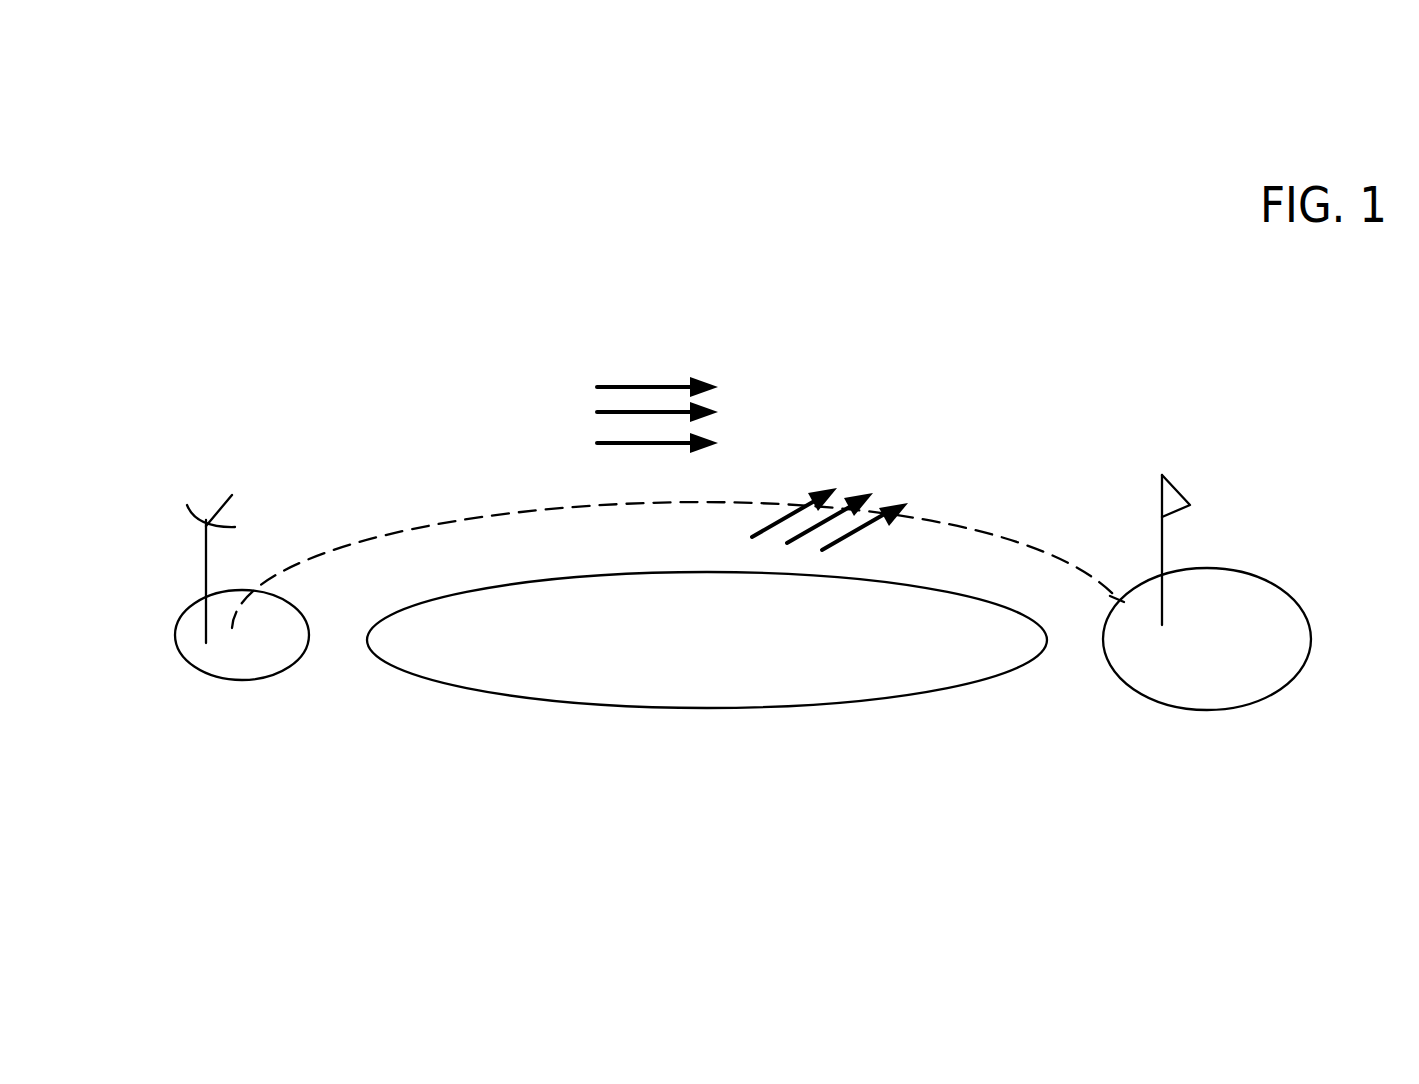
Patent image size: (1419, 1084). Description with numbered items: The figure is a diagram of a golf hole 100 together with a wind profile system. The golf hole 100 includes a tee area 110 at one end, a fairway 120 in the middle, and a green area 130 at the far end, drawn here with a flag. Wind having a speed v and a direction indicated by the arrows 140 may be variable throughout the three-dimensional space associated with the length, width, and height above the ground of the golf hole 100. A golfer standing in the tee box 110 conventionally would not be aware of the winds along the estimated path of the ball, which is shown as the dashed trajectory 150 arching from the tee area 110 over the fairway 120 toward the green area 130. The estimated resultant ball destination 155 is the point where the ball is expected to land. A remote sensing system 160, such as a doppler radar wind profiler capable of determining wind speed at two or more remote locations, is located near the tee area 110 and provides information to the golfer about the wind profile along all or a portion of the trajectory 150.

The golf hole 100 is at (947, 422).
The tee area 110 is at (265, 665).
The fairway 120 is at (845, 687).
The green area 130 is at (1258, 670).
The arrows 140 is at (797, 505).
The trajectory 150 is at (1073, 567).
The estimated resultant ball destination 155 is at (1120, 607).
The remote sensing system 160 is at (206, 557).